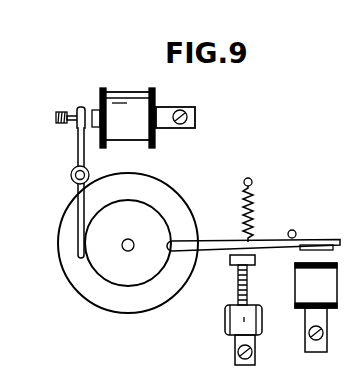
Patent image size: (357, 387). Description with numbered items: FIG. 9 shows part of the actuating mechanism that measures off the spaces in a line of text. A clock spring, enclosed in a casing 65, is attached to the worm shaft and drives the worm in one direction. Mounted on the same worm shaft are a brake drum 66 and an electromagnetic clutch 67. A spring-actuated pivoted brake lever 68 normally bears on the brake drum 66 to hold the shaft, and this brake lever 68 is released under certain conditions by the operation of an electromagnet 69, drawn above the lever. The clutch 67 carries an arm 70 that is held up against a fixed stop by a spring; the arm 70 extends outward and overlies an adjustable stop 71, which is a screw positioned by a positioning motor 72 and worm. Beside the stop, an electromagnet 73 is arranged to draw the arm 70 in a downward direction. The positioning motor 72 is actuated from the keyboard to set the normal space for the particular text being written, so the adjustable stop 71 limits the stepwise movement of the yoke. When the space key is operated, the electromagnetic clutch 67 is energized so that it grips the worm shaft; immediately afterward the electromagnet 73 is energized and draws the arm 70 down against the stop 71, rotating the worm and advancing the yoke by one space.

The casing 65 is at (156, 179).
The brake drum 66 is at (165, 216).
The electromagnetic clutch 67 is at (153, 208).
The brake lever 68 is at (77, 150).
The electromagnet 69 is at (128, 94).
The arm 70 is at (312, 238).
The adjustable stop 71 is at (232, 260).
The positioning motor 72 is at (225, 322).
The electromagnet 73 is at (297, 283).